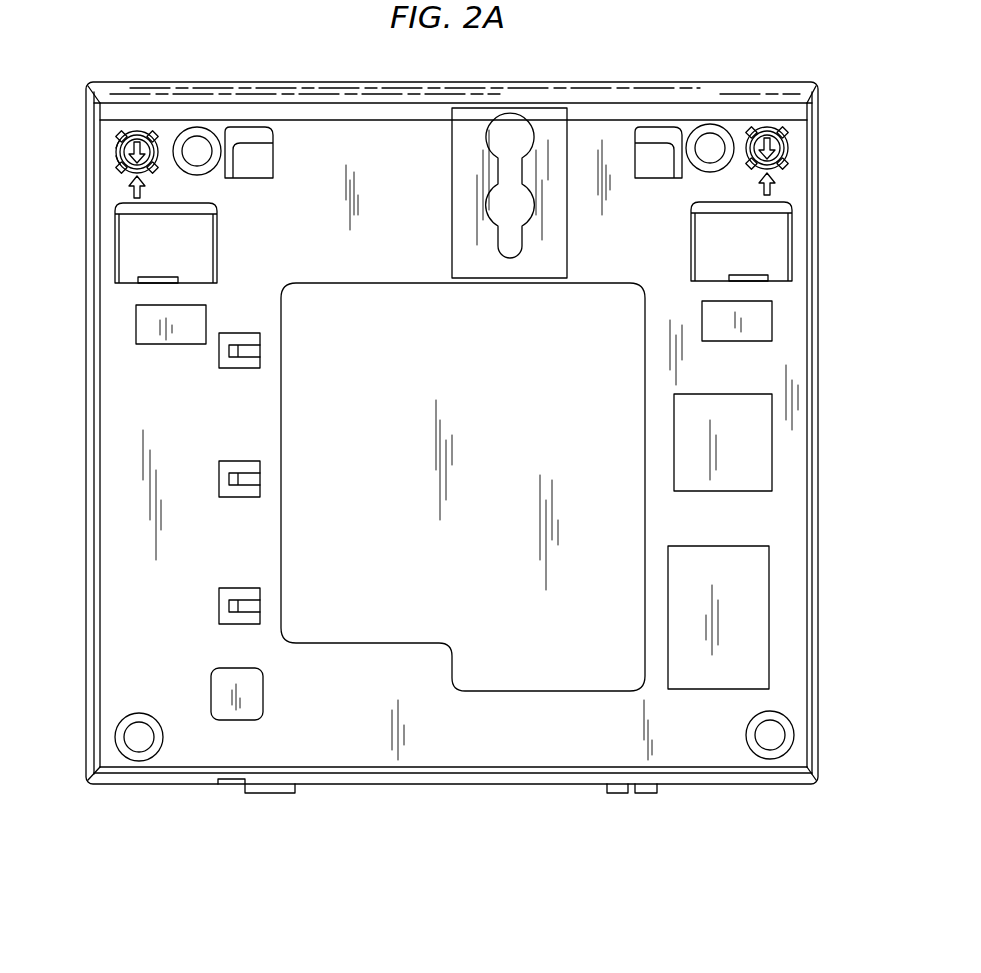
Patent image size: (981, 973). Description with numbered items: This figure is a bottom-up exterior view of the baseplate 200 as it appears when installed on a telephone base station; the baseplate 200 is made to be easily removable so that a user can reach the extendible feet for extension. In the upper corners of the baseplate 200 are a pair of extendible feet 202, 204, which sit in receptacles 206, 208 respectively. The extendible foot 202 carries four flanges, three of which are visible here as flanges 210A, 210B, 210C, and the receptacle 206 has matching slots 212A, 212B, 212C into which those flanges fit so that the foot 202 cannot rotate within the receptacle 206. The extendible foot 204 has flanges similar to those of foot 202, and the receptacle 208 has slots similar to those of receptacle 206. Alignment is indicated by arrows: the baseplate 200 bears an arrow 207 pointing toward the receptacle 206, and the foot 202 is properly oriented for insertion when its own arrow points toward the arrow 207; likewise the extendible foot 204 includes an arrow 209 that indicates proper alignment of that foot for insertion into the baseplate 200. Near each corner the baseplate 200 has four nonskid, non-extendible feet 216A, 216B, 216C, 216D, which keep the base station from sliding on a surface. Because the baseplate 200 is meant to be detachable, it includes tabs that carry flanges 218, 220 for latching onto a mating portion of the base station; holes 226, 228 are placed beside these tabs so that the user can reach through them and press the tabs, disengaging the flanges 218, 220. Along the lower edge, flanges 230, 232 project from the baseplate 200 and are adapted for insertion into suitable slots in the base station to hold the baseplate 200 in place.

The baseplate 200 is at (80, 747).
The extendible foot 202 is at (150, 152).
The extendible foot 204 is at (768, 133).
The receptacle 206 is at (138, 131).
The arrow 207 is at (128, 192).
The receptacle 208 is at (777, 167).
The arrow 209 is at (758, 190).
The flange 210A is at (118, 168).
The flange 210B is at (118, 136).
The flange 210C is at (160, 135).
The slot 212A is at (117, 163).
The slot 212B is at (117, 141).
The slot 212C is at (152, 130).
The nonskid non-extendible foot 216A is at (213, 170).
The nonskid non-extendible foot 216B is at (690, 168).
The nonskid non-extendible foot 216C is at (163, 750).
The nonskid non-extendible foot 216D is at (746, 738).
The flange 218 is at (158, 277).
The flange 220 is at (752, 275).
The hole 226 is at (218, 228).
The hole 228 is at (691, 226).
The flange 230 is at (273, 793).
The flange 232 is at (617, 793).